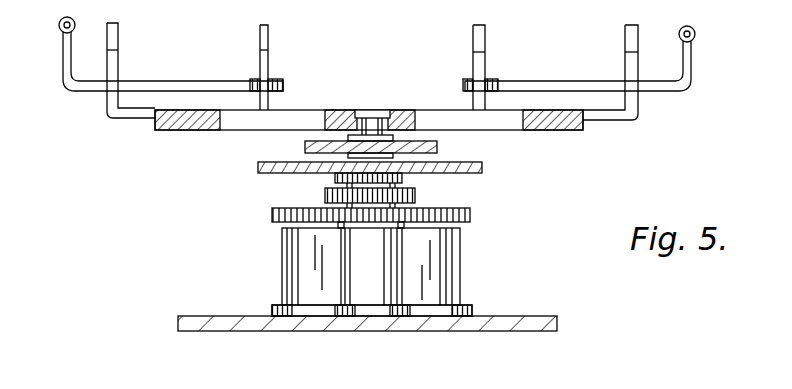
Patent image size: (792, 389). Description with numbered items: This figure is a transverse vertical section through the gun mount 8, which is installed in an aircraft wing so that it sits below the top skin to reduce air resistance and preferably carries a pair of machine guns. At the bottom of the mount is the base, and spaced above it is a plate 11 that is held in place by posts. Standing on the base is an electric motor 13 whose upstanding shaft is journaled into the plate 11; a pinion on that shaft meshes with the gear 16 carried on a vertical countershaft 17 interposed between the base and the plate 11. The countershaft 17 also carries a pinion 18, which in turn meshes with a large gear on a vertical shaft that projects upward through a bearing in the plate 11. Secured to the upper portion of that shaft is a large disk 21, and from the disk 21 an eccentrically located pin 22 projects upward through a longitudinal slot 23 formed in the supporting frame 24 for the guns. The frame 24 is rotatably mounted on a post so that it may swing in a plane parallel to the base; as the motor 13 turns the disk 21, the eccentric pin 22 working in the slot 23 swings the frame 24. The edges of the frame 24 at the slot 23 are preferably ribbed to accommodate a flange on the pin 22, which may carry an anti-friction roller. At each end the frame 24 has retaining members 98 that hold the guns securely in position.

The gun mount 8 is at (485, 295).
The plate 11 is at (484, 163).
The electric motor 13 is at (445, 255).
The gear 16 is at (470, 213).
The vertical countershaft 17 is at (356, 256).
The pinion 18 is at (430, 192).
The large disk 21 is at (437, 148).
The pin 22 is at (367, 110).
The longitudinal slot 23 is at (288, 122).
The supporting frame 24 is at (407, 115).
The retaining members 98 is at (180, 82).